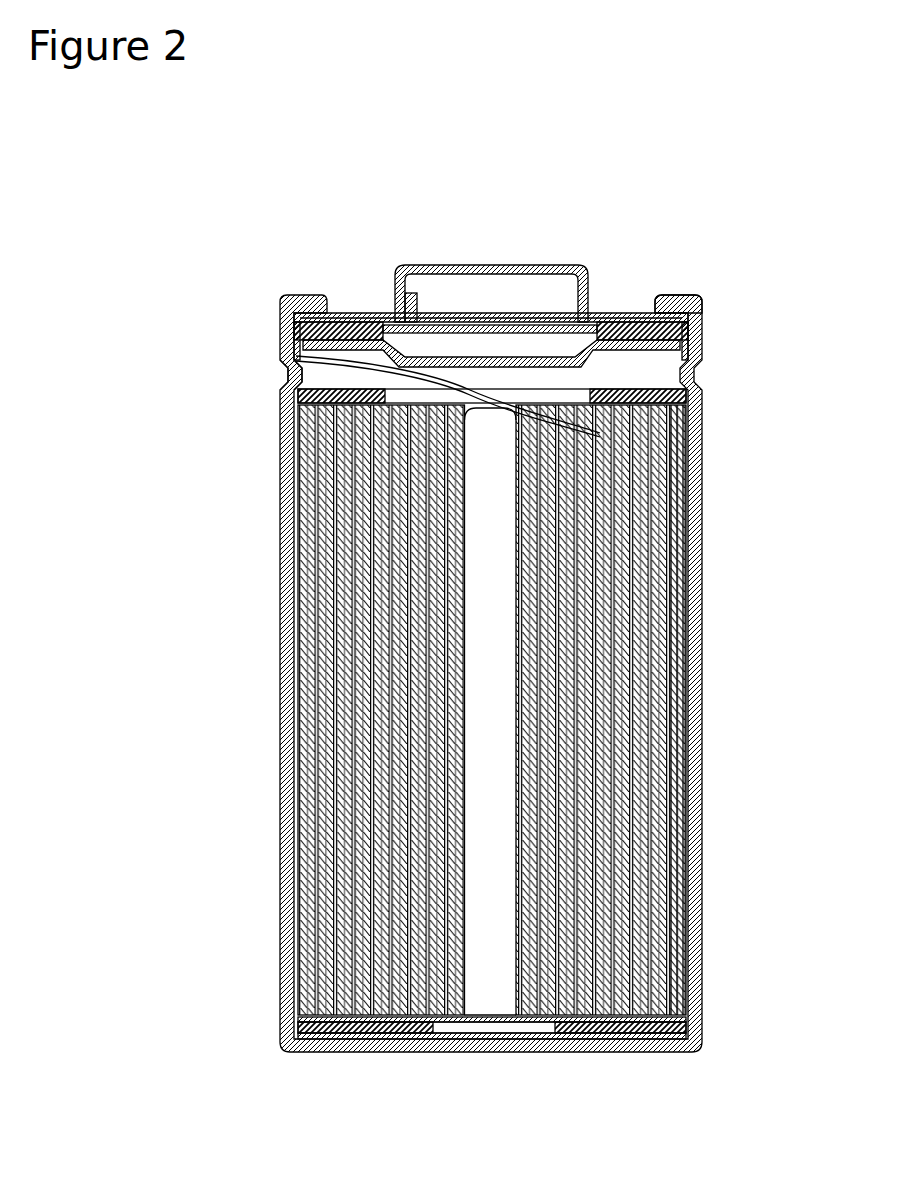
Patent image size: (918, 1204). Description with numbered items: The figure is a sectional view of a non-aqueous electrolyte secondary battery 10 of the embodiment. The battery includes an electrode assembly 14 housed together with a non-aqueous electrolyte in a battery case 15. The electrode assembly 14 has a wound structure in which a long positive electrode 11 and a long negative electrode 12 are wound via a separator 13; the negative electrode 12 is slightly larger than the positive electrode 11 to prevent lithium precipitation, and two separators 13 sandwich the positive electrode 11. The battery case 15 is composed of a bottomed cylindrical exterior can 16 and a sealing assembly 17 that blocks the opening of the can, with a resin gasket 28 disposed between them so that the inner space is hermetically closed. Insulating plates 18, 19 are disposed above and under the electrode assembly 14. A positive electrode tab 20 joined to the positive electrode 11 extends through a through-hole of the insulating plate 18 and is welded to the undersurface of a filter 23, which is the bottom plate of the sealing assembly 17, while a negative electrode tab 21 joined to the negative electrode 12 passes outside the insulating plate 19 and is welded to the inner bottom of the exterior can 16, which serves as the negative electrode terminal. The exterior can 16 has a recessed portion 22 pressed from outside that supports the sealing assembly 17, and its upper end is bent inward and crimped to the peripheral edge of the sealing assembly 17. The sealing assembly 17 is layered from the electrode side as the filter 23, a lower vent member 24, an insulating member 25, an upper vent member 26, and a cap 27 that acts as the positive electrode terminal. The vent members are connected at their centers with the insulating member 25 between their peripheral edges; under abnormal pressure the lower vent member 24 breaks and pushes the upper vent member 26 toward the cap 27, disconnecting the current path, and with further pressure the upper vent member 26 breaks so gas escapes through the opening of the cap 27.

The non-aqueous electrolyte secondary battery 10 is at (712, 152).
The positive electrode 11 is at (700, 770).
The negative electrode 12 is at (700, 797).
The separator 13 is at (700, 822).
The electrode assembly 14 is at (783, 758).
The battery case 15 is at (687, 215).
The exterior can 16 is at (670, 300).
The sealing assembly 17 is at (610, 318).
The insulating plate 18 is at (700, 395).
The insulating plate 19 is at (703, 1027).
The positive electrode tab 20 is at (278, 354).
The negative electrode tab 21 is at (298, 1020).
The recessed portion 22 is at (278, 380).
The filter 23 is at (493, 347).
The lower vent member 24 is at (407, 323).
The insulating member 25 is at (350, 318).
The upper vent member 26 is at (427, 323).
The cap 27 is at (551, 266).
The gasket 28 is at (703, 312).